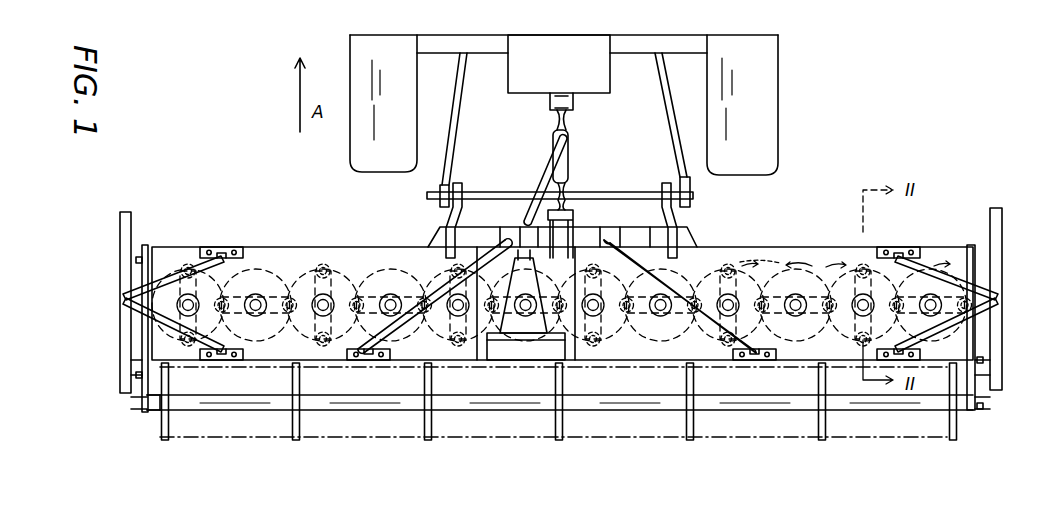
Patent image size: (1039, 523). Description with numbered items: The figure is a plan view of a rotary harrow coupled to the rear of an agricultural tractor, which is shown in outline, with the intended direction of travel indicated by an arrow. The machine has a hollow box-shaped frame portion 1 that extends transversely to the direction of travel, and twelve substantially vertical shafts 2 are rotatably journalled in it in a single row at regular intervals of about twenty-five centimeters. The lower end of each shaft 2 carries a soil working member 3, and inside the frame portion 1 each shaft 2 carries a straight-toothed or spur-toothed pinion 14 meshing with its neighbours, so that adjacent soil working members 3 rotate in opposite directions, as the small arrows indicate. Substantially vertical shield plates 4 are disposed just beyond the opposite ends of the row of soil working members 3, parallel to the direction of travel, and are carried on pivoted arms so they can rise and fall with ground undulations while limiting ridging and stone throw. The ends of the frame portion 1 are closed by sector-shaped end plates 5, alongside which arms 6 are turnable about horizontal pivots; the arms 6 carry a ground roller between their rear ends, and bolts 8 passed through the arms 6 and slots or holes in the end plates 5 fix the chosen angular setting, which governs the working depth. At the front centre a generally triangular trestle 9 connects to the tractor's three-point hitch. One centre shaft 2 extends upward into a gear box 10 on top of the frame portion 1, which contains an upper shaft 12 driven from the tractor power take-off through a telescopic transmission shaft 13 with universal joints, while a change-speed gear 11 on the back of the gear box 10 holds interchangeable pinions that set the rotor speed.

The frame portion 1 is at (845, 234).
The shafts 2 is at (260, 298).
The soil working member 3 is at (900, 440).
The shield plates 4 is at (120, 250).
The end plates 5 is at (148, 247).
The arms 6 is at (647, 228).
The bolts 8 is at (132, 368).
The trestle 9 is at (148, 405).
The gear box 10 is at (545, 325).
The change-speed gear 11 is at (498, 352).
The upper shaft 12 is at (532, 240).
The telescopic transmission shaft 13 is at (550, 177).
The pinion 14 is at (765, 257).